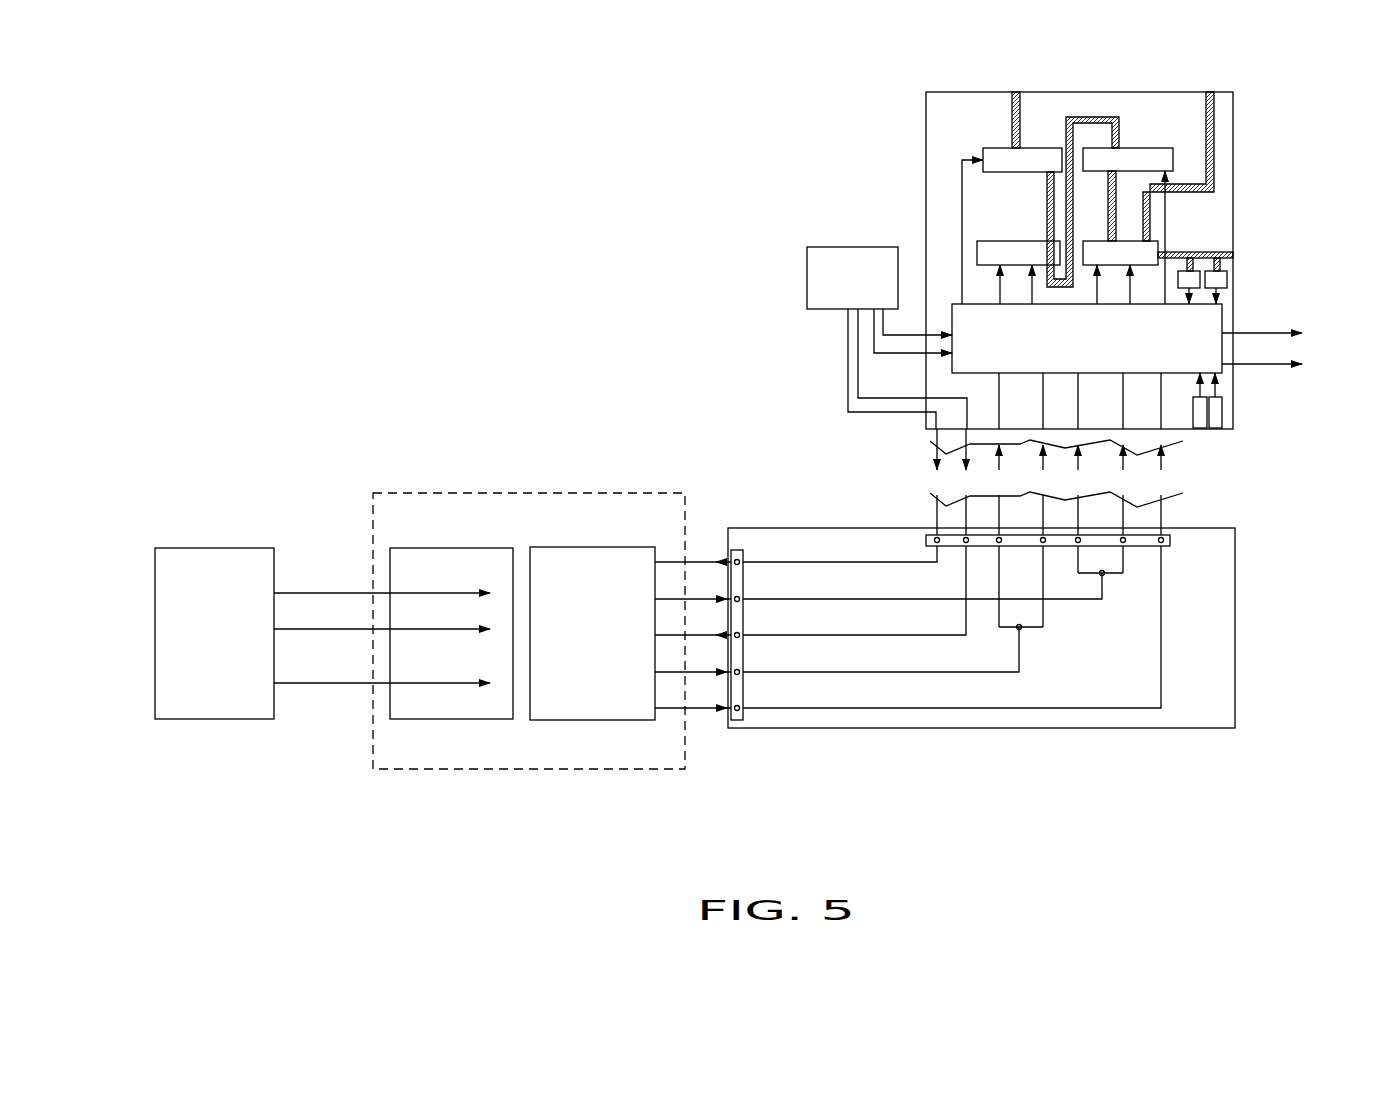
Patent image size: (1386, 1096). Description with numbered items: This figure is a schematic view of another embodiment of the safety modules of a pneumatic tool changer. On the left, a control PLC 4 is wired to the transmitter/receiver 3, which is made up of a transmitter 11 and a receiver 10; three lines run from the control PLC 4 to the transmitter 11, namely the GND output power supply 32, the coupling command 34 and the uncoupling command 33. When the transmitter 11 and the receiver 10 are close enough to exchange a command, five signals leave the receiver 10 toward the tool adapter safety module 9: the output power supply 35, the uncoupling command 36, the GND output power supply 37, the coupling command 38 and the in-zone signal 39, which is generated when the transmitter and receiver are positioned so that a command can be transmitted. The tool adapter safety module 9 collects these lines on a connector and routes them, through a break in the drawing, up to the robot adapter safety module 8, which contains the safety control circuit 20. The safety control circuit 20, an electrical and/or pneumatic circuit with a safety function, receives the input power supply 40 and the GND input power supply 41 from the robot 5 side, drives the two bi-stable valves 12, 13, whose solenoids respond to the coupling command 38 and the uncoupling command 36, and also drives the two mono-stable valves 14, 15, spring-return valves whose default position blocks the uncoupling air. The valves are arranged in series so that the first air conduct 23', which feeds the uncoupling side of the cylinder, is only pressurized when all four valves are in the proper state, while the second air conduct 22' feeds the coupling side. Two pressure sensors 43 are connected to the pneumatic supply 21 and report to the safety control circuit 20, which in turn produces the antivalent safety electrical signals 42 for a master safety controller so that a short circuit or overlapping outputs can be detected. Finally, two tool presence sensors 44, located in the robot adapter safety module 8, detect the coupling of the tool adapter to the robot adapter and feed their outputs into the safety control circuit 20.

The transmitter/receiver 3 is at (566, 770).
The control PLC 4 is at (172, 557).
The robot 5 is at (813, 260).
The robot adapter safety module 8 is at (926, 150).
The tool adapter safety module 9 is at (1183, 707).
The receiver 10 is at (585, 555).
The transmitter 11 is at (427, 556).
The bi-stable valve 12 is at (1155, 245).
The bi-stable valve 13 is at (990, 245).
The mono-stable valve 14 is at (1142, 150).
The mono-stable valve 15 is at (1002, 148).
The safety control circuit 20 is at (985, 366).
The pneumatic supply 21 is at (1208, 252).
The second air conduct 22' is at (1231, 161).
The first air conduct 23' is at (1047, 92).
The GND output power supply 32 is at (303, 592).
The uncoupling command 33 is at (345, 683).
The coupling command 34 is at (303, 630).
The output power supply 35 is at (708, 560).
The uncoupling command 36 is at (697, 597).
The GND output power supply 37 is at (707, 633).
The coupling command 38 is at (705, 673).
The in-zone signal 39 is at (698, 712).
The input power supply 40 is at (898, 336).
The GND input power supply 41 is at (898, 352).
The safety electrical signals 42 is at (1255, 333).
The pressure sensors 43 is at (1196, 277).
The tool presence sensors 44 is at (1218, 408).